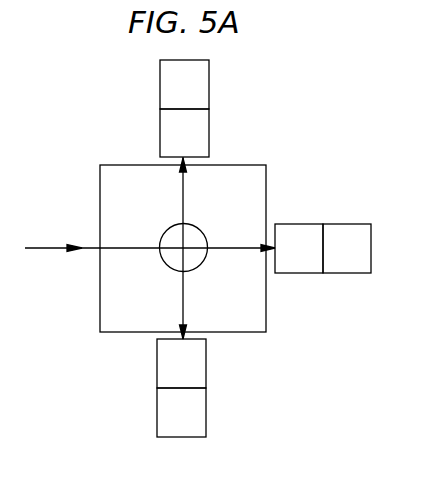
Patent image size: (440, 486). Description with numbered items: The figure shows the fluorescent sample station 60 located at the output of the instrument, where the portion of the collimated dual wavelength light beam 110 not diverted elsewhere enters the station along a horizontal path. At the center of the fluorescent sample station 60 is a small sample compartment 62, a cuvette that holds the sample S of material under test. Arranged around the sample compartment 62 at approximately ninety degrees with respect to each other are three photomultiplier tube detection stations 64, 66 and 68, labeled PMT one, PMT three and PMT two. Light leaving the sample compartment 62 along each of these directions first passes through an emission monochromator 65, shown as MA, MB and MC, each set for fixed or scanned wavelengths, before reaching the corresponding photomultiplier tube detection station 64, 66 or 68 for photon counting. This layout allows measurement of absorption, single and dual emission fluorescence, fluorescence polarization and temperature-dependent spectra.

The fluorescent sample station 60 is at (103, 132).
The sample compartment 62 is at (203, 232).
The photomultiplier tube detection station 64 is at (210, 77).
The emission monochromator 65 is at (210, 126).
The photomultiplier tube detection station 66 is at (372, 236).
The photomultiplier tube detection station 68 is at (207, 428).
The input light beam 110 is at (52, 247).